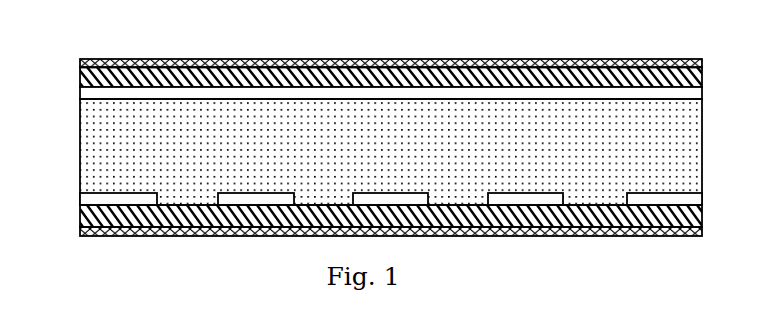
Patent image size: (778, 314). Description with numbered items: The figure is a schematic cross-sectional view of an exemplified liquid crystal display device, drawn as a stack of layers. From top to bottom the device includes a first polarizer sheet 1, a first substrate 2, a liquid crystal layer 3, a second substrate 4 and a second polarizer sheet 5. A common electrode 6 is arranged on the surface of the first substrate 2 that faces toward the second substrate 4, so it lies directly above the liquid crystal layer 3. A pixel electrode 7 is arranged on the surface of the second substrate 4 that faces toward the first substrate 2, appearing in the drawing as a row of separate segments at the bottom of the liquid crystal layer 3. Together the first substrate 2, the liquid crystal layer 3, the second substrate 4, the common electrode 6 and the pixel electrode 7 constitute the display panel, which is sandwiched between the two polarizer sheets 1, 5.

The first polarizer sheet 1 is at (80, 62).
The first substrate 2 is at (80, 79).
The common electrode 6 is at (80, 95).
The liquid crystal layer 3 is at (87, 162).
The pixel electrode 7 is at (82, 200).
The second substrate 4 is at (82, 218).
The second polarizer sheet 5 is at (82, 231).